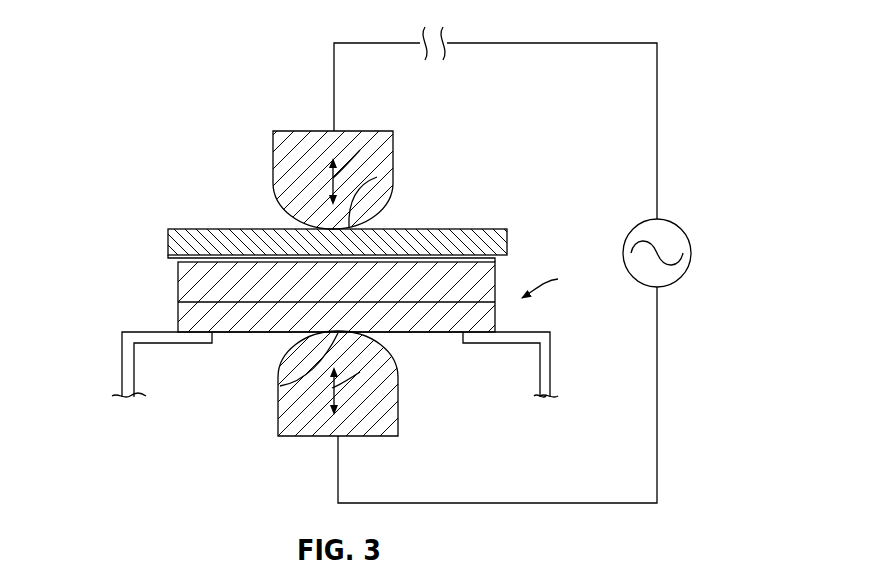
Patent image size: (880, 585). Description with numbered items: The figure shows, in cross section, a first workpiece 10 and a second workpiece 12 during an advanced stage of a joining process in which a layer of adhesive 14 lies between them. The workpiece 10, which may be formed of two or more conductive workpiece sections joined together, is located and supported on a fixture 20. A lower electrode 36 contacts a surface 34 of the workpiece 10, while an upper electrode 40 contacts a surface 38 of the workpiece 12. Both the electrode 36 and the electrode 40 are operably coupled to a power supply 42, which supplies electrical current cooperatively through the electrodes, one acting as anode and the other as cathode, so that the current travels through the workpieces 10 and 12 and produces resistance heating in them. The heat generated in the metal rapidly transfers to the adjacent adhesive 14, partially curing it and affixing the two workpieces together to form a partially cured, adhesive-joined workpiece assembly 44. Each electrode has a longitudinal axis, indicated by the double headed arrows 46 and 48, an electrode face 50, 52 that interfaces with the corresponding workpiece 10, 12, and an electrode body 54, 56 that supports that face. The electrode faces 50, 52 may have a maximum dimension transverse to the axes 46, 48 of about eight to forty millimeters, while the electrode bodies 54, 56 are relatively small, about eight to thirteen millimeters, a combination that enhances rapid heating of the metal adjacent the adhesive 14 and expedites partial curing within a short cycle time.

The workpiece 10 is at (180, 283).
The workpiece 12 is at (495, 245).
The adhesive 14 is at (247, 232).
The fixture 20 is at (122, 343).
The surface 34 is at (232, 333).
The electrode 36 is at (308, 422).
The surface 38 is at (200, 229).
The electrode 40 is at (313, 158).
The power supply 42 is at (693, 252).
The adhesive-joined workpiece assembly 44 is at (560, 282).
The longitudinal axis 46 is at (360, 372).
The longitudinal axis 48 is at (360, 150).
The electrode face 50 is at (280, 388).
The electrode face 52 is at (377, 175).
The electrode body 54 is at (385, 407).
The electrode body 56 is at (383, 155).